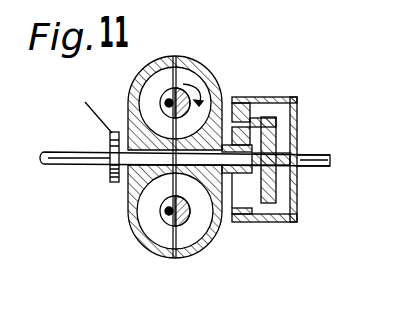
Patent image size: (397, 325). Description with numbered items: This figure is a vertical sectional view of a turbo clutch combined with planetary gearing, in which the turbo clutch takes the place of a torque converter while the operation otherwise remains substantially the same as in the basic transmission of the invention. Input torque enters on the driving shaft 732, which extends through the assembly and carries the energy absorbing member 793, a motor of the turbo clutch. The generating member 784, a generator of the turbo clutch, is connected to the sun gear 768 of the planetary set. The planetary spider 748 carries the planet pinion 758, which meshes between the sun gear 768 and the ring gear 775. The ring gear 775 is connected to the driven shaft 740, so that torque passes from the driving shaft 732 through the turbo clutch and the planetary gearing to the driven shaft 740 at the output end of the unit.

The driving shaft 732 is at (89, 151).
The energy absorbing member 793 is at (140, 80).
The generating member 784 is at (201, 84).
The ring gear 775 is at (237, 106).
The planet pinion 758 is at (252, 113).
The sun gear 768 is at (256, 150).
The driven shaft 740 is at (331, 157).
The planetary spider 748 is at (276, 191).